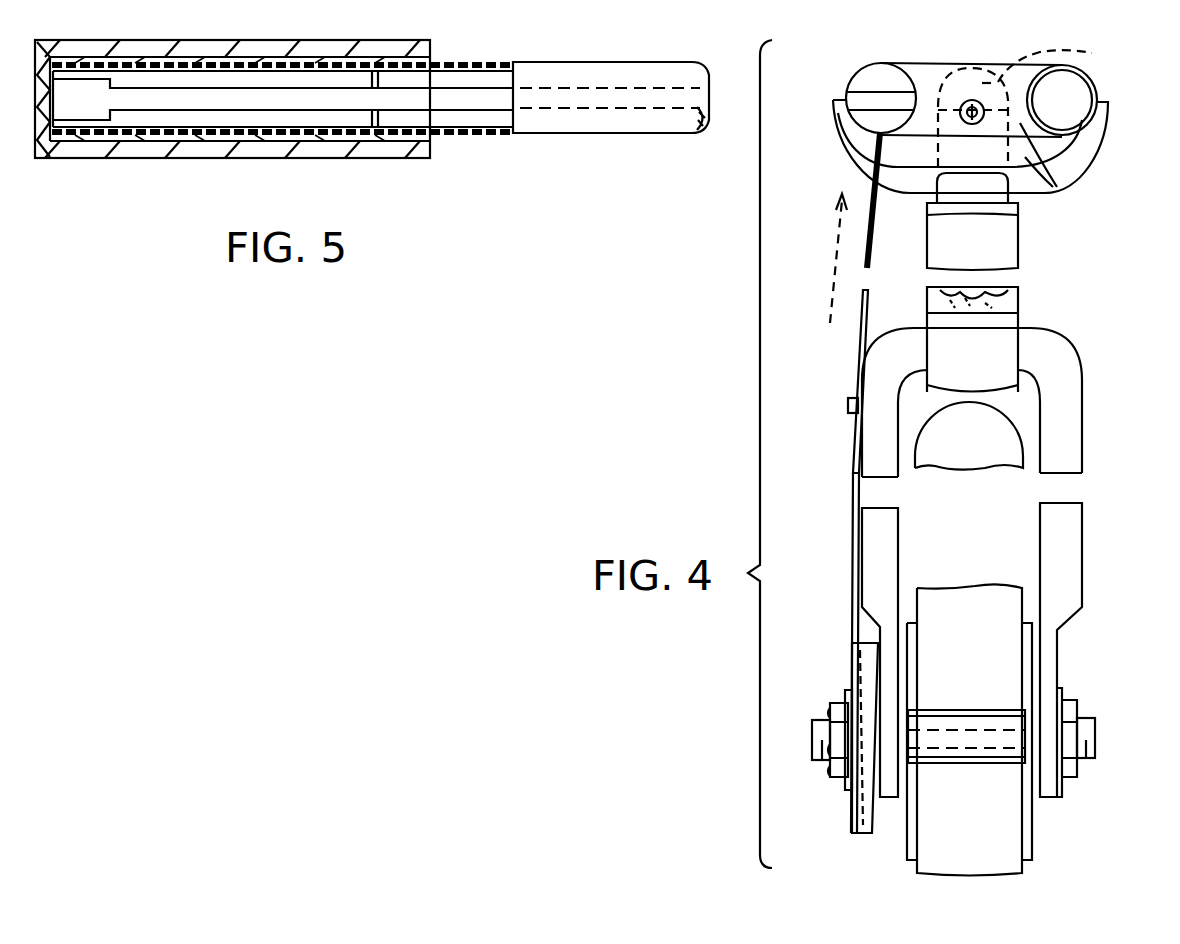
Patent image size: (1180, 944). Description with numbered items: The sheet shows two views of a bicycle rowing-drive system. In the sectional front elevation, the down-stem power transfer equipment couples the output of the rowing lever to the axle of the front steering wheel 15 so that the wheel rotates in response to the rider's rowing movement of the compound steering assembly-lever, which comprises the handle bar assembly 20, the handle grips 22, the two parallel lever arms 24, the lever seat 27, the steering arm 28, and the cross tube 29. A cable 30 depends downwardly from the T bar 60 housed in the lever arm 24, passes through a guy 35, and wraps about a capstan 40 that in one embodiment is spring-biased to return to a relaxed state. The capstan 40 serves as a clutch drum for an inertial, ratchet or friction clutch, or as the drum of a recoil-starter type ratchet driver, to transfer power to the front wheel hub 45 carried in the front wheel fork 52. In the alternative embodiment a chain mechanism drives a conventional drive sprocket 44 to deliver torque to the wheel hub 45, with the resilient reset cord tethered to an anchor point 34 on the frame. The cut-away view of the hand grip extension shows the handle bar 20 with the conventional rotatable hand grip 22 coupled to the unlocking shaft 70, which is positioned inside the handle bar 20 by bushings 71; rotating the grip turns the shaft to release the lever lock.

In FIG. 4, the front steering wheel 15 is at (982, 439).
In FIG. 5, the handle bar assembly 20 is at (628, 123).
In FIG. 5, the handle grip 22 is at (213, 150).
In FIG. 4, the lever arm 24 is at (872, 68).
In FIG. 4, the lever seat 27 is at (1098, 122).
In FIG. 4, the steering arm 28 is at (1085, 54).
In FIG. 4, the cross tube 29 is at (1052, 172).
In FIG. 4, the cable 30 is at (853, 463).
In FIG. 4, the anchor point 34 is at (1008, 300).
In FIG. 4, the guy 35 is at (848, 404).
In FIG. 4, the capstan 40 is at (862, 655).
In FIG. 4, the drive sprocket 44 is at (1037, 777).
In FIG. 4, the front wheel hub 45 is at (973, 715).
In FIG. 4, the front wheel yoke or fork 52 is at (1070, 460).
In FIG. 4, the T bar 60 is at (862, 99).
In FIG. 5, the unlocking shaft 70 is at (575, 98).
In FIG. 5, the bushings 71 is at (368, 148).